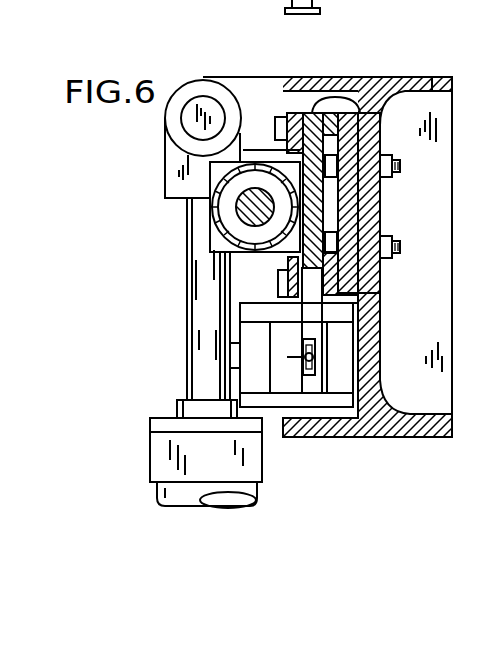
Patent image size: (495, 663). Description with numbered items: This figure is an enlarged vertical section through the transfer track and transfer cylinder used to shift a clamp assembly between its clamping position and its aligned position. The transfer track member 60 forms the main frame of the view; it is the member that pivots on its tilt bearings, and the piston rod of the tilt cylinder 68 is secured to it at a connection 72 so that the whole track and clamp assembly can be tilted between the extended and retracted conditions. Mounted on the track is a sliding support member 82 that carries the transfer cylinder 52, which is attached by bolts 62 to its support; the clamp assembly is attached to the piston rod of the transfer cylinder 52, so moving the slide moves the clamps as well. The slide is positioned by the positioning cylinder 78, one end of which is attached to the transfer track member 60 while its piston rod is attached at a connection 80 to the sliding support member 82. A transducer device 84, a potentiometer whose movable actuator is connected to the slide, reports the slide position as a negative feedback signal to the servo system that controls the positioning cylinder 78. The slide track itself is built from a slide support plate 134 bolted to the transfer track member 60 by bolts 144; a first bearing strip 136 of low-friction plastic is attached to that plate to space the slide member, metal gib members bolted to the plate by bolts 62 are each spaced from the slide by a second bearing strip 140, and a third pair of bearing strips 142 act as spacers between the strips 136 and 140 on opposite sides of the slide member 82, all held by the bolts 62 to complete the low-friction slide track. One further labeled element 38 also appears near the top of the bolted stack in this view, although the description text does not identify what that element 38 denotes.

The transfer track member 60 is at (405, 86).
The connection 72 is at (200, 118).
The transfer cylinder 52 is at (218, 230).
The tilt cylinder 68 is at (150, 466).
The positioning cylinder 78 is at (277, 340).
The connection 80 is at (288, 353).
The transducer device 84 is at (314, 357).
The sliding support member 82 is at (320, 378).
The bolts 62 is at (275, 120).
The plate 38 is at (300, 113).
The second bearing strip 140 is at (305, 113).
The third pair of bearing strips 142 is at (313, 118).
The slide support plate 134 is at (350, 213).
The first bearing strip 136 is at (335, 125).
The bolts 144 is at (400, 168).